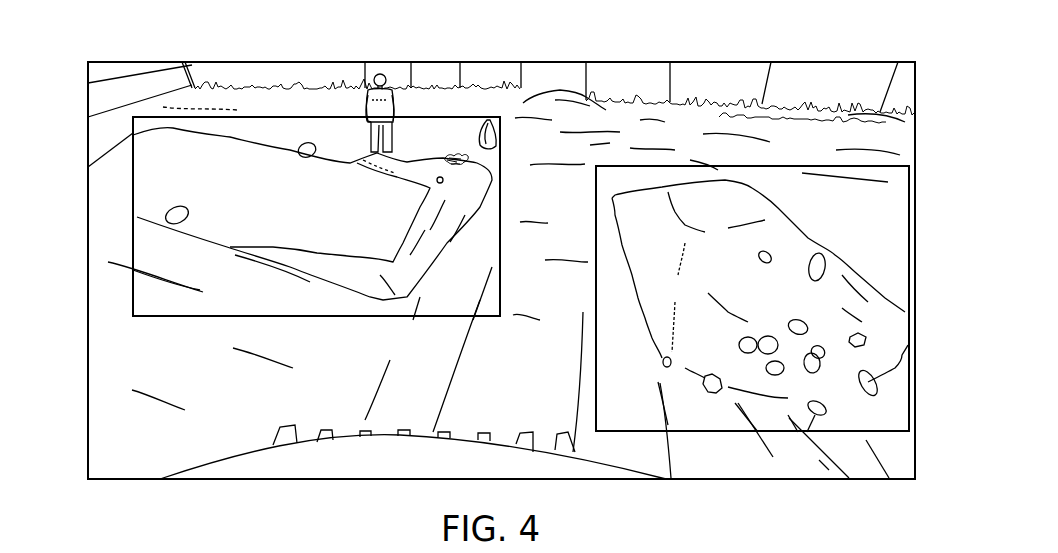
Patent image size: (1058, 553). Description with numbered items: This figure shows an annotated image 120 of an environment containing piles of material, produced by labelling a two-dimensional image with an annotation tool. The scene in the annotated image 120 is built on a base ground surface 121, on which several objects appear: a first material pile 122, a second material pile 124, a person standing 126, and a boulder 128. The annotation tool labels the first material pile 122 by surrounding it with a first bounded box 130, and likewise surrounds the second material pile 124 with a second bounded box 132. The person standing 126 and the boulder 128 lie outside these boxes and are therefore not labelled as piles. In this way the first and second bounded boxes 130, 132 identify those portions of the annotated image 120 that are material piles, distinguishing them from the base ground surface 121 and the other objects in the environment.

The annotated image 120 is at (630, 62).
The base ground surface 121 is at (108, 353).
The first material pile 122 is at (786, 255).
The second material pile 124 is at (160, 173).
The person standing 126 is at (385, 90).
The boulder 128 is at (486, 123).
The first bounded box 130 is at (871, 166).
The second bounded box 132 is at (145, 117).